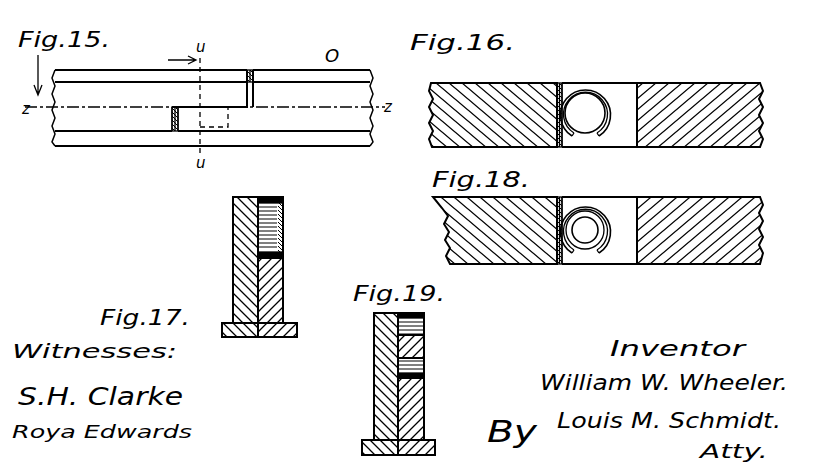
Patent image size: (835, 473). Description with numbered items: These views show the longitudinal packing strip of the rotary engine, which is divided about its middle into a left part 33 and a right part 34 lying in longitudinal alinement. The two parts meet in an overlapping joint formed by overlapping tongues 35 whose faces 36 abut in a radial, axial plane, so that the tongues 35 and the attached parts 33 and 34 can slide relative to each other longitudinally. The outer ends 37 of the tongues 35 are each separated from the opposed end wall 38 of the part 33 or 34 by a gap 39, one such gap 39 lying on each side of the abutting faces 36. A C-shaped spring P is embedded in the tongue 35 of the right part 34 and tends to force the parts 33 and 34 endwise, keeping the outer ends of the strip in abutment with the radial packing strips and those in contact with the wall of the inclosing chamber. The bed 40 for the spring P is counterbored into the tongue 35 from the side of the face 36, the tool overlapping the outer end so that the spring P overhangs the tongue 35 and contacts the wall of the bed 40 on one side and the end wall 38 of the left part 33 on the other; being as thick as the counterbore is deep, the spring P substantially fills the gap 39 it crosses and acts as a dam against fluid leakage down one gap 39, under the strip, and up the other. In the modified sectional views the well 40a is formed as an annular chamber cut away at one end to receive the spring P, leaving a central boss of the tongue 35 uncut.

In FIG. 15, the left part 33 is at (124, 90).
In FIG. 16, the left part 33 is at (455, 95).
In FIG. 18, the left part 33 is at (447, 233).
In FIG. 17, the left part 33 is at (233, 232).
In FIG. 19, the left part 33 is at (374, 352).
In FIG. 15, the right part 34 is at (316, 84).
In FIG. 16, the right part 34 is at (736, 84).
In FIG. 18, the right part 34 is at (725, 265).
In FIG. 17, the right part 34 is at (283, 197).
In FIG. 19, the right part 34 is at (424, 313).
In FIG. 15, the overlapping tongues 35 is at (222, 95).
In FIG. 16, the overlapping tongues 35 is at (626, 147).
In FIG. 18, the overlapping tongues 35 is at (624, 265).
In FIG. 17, the overlapping tongues 35 is at (285, 203).
In FIG. 19, the overlapping tongues 35 is at (424, 350).
In FIG. 15, the faces 36 is at (238, 111).
In FIG. 16, the faces 36 is at (621, 84).
In FIG. 18, the faces 36 is at (599, 230).
In FIG. 17, the faces 36 is at (258, 236).
In FIG. 19, the faces 36 is at (398, 356).
In FIG. 15, the outer ends 37 is at (252, 80).
In FIG. 16, the outer ends 37 is at (562, 83).
In FIG. 18, the outer ends 37 is at (562, 265).
In FIG. 15, the end wall 38 is at (255, 97).
In FIG. 16, the end wall 38 is at (560, 83).
In FIG. 18, the end wall 38 is at (556, 265).
In FIG. 15, the gap 39 is at (255, 78).
In FIG. 16, the gap 39 is at (560, 84).
In FIG. 18, the gap 39 is at (558, 265).
In FIG. 16, the bed 40 is at (582, 89).
In FIG. 17, the bed 40 is at (283, 268).
In FIG. 18, the well 40a is at (604, 265).
In FIG. 19, the well 40a is at (424, 322).
In FIG. 15, the spring P is at (214, 117).
In FIG. 16, the spring P is at (600, 137).
In FIG. 18, the spring P is at (591, 206).
In FIG. 17, the spring P is at (268, 231).